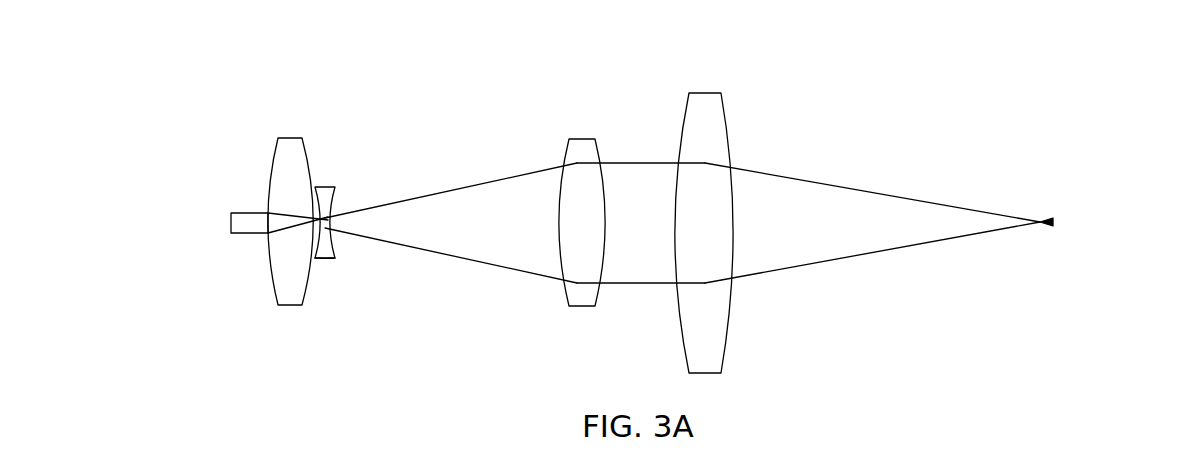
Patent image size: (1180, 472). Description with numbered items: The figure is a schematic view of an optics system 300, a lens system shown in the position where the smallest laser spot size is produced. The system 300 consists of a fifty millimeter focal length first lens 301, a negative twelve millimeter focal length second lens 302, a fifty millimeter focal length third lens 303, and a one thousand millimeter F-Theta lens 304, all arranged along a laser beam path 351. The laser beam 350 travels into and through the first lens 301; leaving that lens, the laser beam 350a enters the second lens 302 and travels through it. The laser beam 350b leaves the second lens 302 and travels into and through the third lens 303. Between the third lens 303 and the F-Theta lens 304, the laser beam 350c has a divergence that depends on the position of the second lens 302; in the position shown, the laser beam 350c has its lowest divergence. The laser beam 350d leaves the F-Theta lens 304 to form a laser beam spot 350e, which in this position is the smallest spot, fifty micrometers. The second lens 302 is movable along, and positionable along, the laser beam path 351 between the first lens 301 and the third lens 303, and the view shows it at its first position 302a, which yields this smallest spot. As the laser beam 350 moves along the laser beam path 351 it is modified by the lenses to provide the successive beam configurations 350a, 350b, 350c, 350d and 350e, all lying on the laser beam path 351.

The optics system 300 is at (959, 68).
The first lens 301 is at (288, 138).
The second lens 302 is at (323, 187).
The first position 302a is at (327, 266).
The third lens 303 is at (578, 138).
The F-Theta lens 304 is at (707, 93).
The laser beam 350 is at (244, 234).
The laser beam 350a is at (315, 187).
The laser beam 350b is at (465, 187).
The laser beam 350c is at (655, 283).
The laser beam 350d is at (830, 185).
The laser beam spot 350e is at (1050, 222).
The laser beam path 351 is at (472, 290).